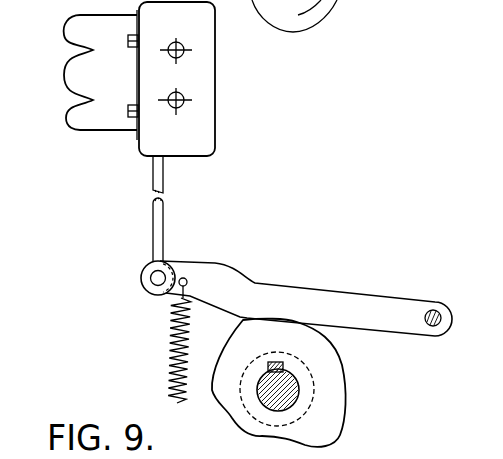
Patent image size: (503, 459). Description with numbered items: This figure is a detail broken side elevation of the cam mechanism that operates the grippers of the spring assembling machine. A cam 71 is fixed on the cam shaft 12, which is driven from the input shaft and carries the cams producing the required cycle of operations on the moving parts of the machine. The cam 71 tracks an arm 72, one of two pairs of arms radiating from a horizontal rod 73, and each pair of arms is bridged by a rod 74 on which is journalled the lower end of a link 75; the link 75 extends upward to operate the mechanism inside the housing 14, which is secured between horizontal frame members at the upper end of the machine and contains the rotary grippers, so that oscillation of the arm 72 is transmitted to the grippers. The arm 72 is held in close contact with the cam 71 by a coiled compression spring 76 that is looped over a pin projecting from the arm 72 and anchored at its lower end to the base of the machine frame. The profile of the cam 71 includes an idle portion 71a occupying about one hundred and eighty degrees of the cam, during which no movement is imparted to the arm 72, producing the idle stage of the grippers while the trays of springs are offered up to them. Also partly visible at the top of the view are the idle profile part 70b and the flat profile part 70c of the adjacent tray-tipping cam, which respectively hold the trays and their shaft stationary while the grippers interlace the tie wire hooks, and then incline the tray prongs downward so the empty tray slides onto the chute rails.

The cam shaft 12 is at (296, 393).
The housing 14 is at (198, 75).
The idle profile part of cam 70 70b is at (348, 7).
The flat profile part of cam 70 70c is at (256, 2).
The cam 71 is at (323, 380).
The idle profile portion of cam 71 71a is at (325, 345).
The arm 72 is at (298, 298).
The horizontal rod 73 is at (430, 309).
The rod 74 is at (153, 283).
The link 75 is at (158, 229).
The coiled compression spring 76 is at (170, 355).